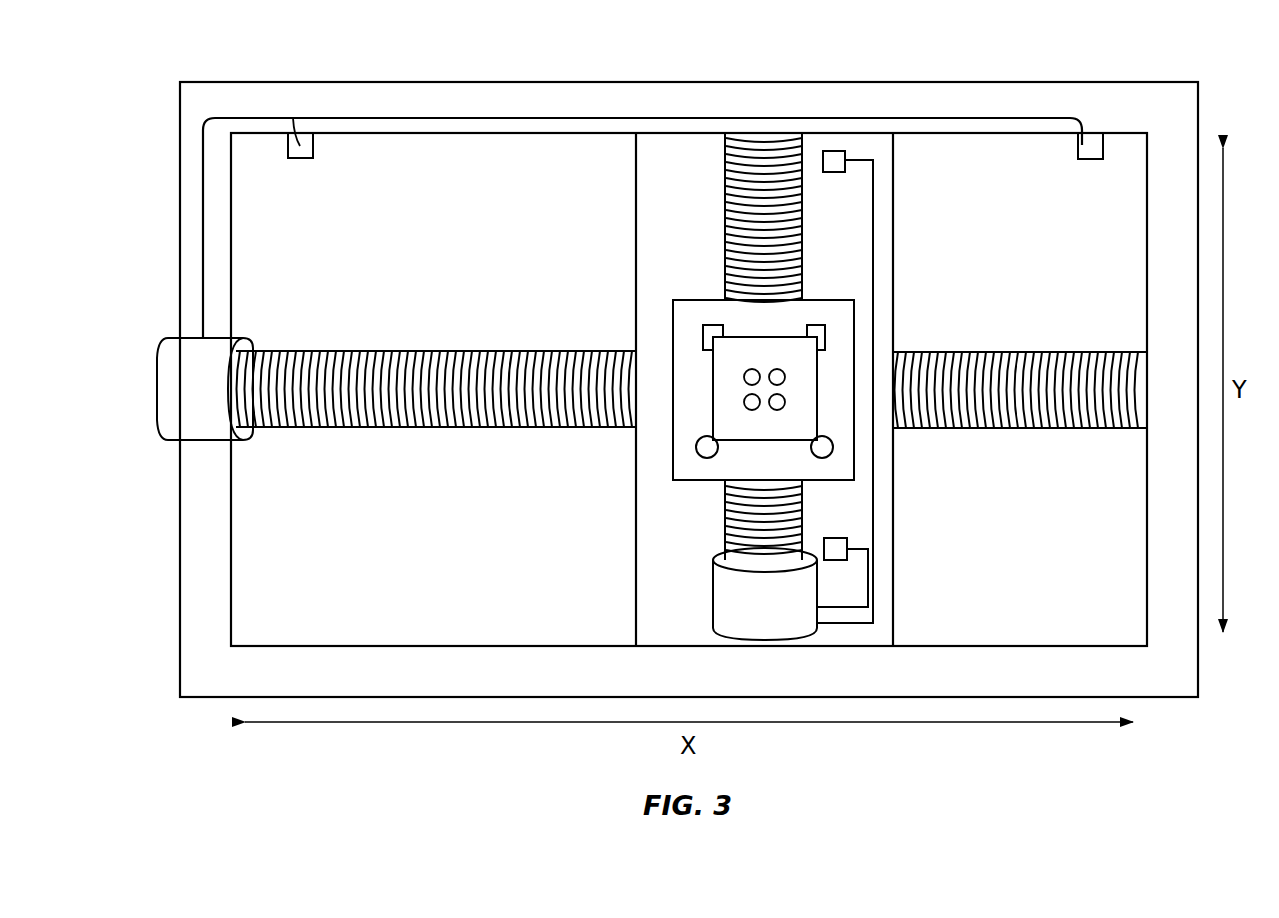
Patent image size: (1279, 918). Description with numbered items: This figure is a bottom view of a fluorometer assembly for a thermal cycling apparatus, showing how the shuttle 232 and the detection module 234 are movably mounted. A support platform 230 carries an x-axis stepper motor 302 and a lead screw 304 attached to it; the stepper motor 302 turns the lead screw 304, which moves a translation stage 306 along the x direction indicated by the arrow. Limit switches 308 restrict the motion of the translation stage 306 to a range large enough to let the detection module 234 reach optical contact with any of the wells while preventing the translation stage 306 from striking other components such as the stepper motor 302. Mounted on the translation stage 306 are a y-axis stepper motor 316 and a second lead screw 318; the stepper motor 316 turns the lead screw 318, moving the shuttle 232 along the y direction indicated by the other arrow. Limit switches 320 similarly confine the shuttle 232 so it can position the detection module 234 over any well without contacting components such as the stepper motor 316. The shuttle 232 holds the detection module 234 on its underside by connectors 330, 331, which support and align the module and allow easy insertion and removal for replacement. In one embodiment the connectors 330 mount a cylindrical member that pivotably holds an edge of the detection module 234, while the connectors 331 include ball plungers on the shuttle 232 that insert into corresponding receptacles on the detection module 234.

The support platform 230 is at (1183, 95).
The shuttle 232 is at (714, 300).
The detection module 234 is at (787, 364).
The x-axis stepper motor 302 is at (238, 338).
The lead screw 304 is at (374, 350).
The translation stage 306 is at (654, 526).
The limit switches 308 is at (313, 158).
The y-axis stepper motor 316 is at (714, 572).
The lead screw 318 is at (725, 196).
The limit switches 320 is at (833, 172).
The connectors 330 is at (815, 326).
The connectors 331 is at (816, 454).